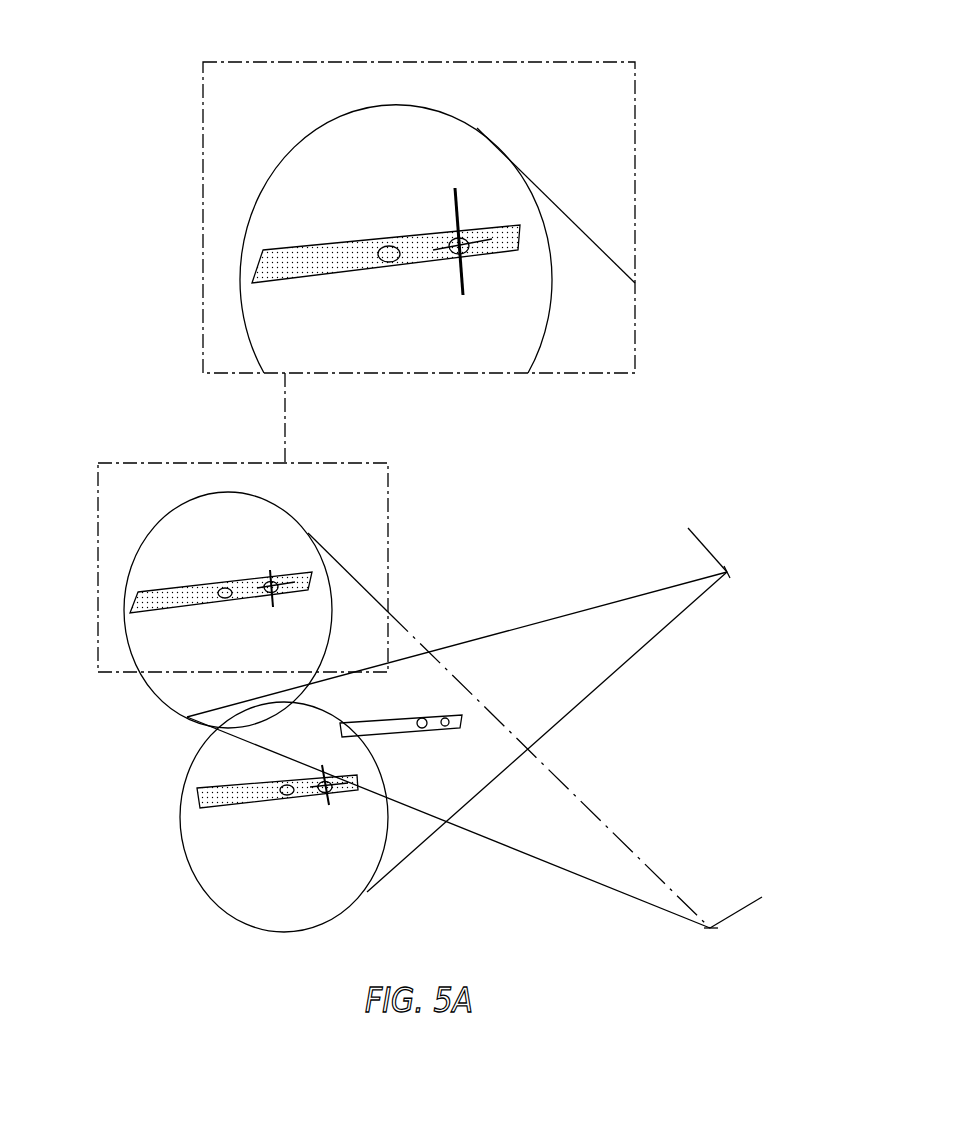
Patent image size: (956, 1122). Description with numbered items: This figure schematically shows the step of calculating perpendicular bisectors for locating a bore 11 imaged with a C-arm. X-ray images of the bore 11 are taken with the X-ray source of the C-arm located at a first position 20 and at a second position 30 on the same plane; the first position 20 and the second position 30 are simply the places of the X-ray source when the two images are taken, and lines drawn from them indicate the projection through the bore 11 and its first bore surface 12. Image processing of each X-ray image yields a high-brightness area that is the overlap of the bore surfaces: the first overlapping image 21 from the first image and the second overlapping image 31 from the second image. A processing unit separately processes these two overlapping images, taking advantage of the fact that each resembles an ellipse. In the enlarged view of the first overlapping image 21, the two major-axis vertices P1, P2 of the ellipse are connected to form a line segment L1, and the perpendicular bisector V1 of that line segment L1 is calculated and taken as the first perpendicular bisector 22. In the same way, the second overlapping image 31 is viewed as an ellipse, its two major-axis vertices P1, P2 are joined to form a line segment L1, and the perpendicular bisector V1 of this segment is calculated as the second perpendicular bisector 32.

The bore 11 is at (433, 731).
The first bore surface 12 is at (445, 727).
The first position 20 is at (710, 928).
The first overlapping image 21 is at (270, 577).
The first perpendicular bisector 22 is at (275, 603).
The second position 30 is at (727, 572).
The second overlapping image 31 is at (320, 800).
The second perpendicular bisector 32 is at (327, 797).
The major-axis vertex P1 is at (443, 247).
The major-axis vertex P2 is at (475, 238).
The perpendicular bisector V1 is at (459, 229).
The line segment L1 is at (476, 240).